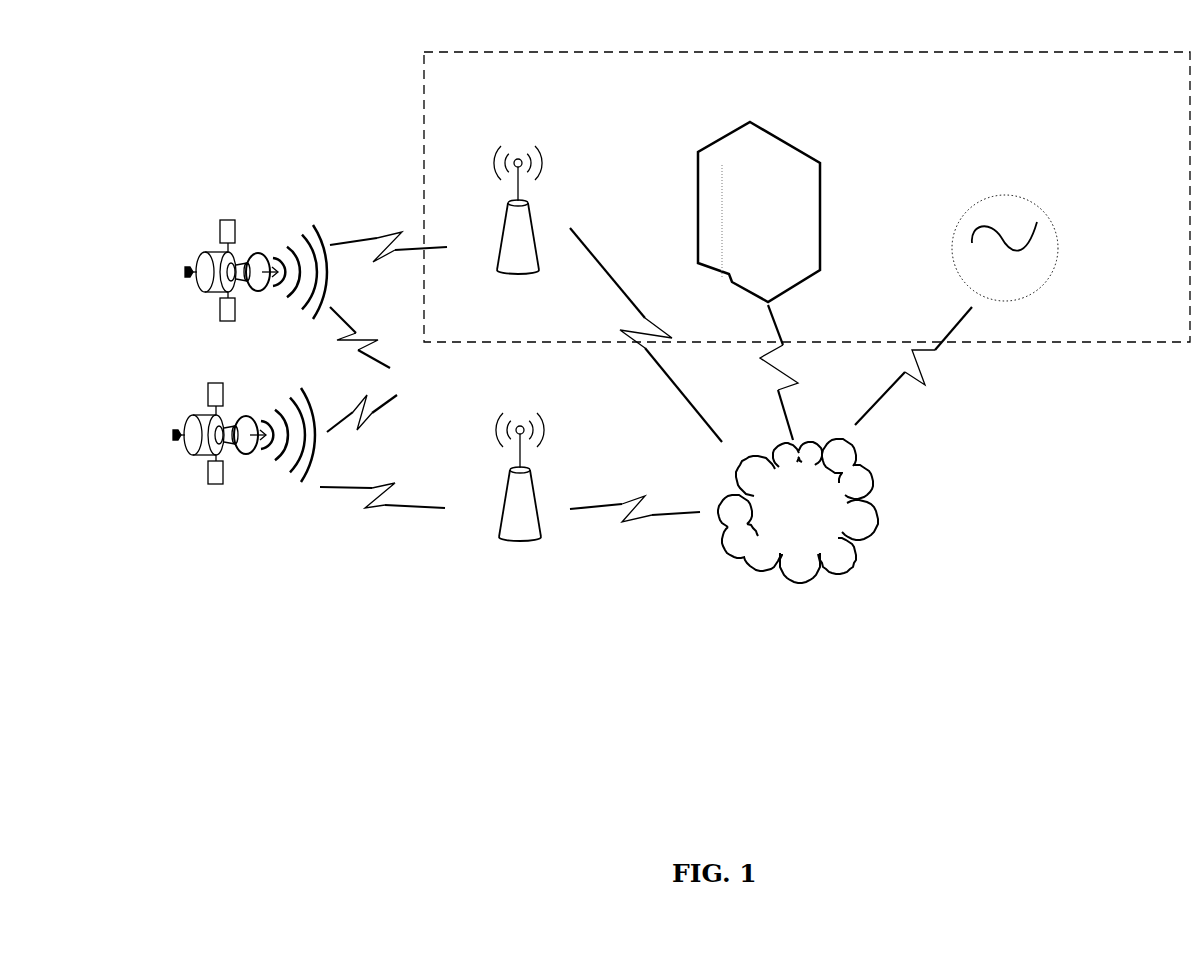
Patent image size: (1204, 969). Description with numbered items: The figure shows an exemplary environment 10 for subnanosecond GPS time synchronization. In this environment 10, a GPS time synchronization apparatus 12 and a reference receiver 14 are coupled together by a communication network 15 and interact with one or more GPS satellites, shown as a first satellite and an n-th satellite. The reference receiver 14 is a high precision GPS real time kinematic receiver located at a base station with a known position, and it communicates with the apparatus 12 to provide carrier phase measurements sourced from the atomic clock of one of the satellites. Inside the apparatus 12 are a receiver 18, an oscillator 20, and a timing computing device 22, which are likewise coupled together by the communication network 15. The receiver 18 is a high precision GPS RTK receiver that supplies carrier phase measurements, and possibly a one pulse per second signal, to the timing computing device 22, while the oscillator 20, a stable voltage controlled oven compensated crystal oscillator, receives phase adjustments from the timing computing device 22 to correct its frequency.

The environment 10 is at (278, 98).
The GPS time synchronization apparatus 12 is at (1010, 345).
The reference receiver 14 is at (540, 547).
The communication network 15 is at (798, 511).
The receiver 18 is at (530, 145).
The oscillator 20 is at (1040, 203).
The timing computing device 22 is at (790, 140).